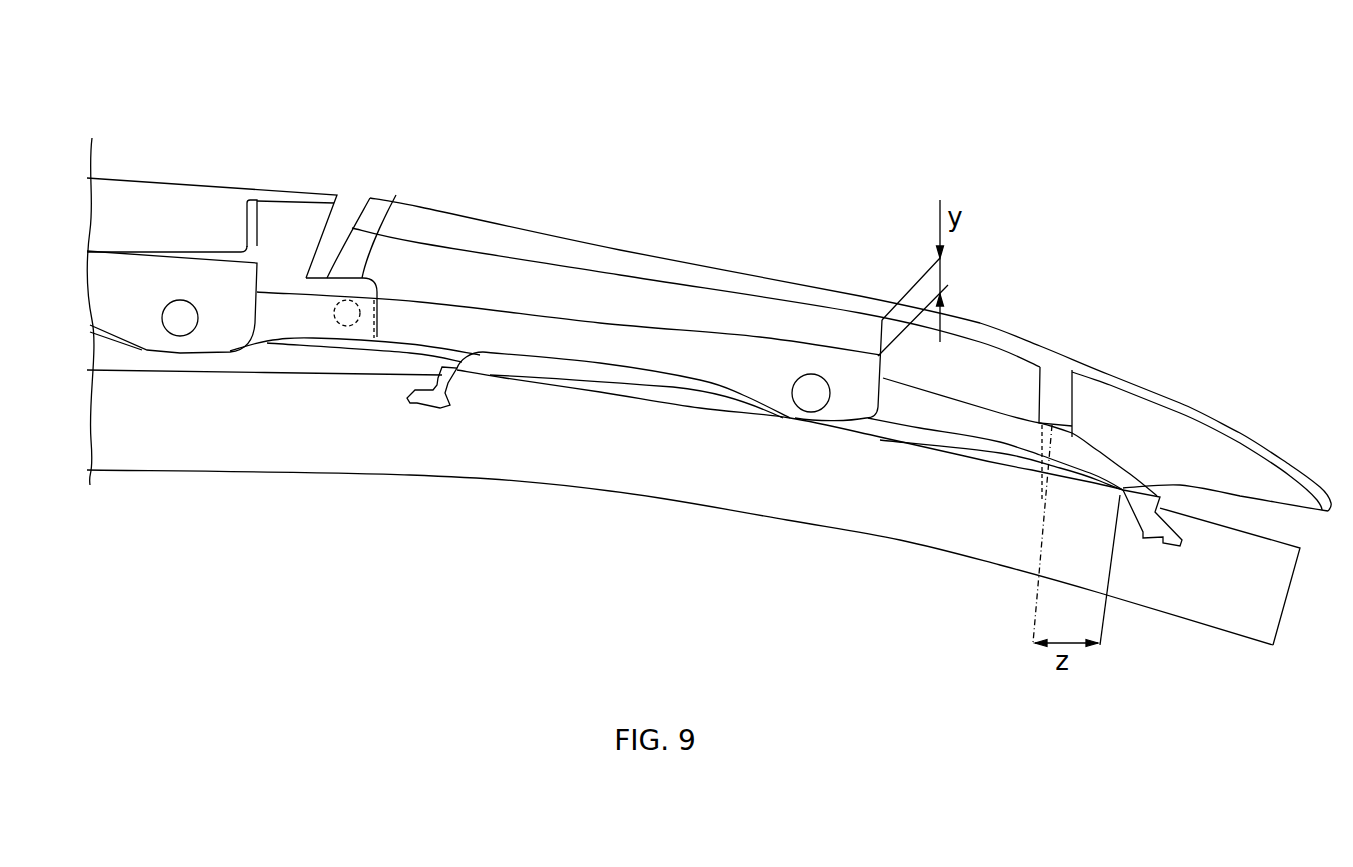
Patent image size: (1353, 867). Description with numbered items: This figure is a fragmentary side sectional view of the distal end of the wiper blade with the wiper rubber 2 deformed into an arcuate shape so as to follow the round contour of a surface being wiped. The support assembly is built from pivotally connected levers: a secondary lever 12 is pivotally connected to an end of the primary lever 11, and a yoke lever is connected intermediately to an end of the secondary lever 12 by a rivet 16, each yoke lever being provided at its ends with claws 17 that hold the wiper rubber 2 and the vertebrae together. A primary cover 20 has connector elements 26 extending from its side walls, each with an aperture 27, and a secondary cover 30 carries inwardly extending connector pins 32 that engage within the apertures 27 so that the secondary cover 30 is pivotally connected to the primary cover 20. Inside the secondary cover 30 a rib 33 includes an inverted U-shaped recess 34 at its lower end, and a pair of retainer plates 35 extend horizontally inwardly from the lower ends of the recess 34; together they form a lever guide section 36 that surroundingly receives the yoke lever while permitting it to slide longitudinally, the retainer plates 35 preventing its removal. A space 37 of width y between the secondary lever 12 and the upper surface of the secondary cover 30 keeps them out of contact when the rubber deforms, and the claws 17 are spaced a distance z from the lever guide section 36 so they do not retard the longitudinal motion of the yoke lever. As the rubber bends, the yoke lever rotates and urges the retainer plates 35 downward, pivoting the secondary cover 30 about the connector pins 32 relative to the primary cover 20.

The wiper rubber 2 is at (613, 492).
The primary lever 11 is at (180, 355).
The secondary lever 12 is at (610, 318).
The rivet 16 is at (918, 425).
The claw 17 is at (465, 393).
The primary cover 20 is at (158, 178).
The connector element 26 is at (396, 195).
The aperture 27 is at (338, 343).
The secondary cover 30 is at (737, 268).
The connector pin 32 is at (327, 317).
The rib 33 is at (1072, 412).
The recess 34 is at (1072, 437).
The retainer plate 35 is at (1047, 470).
The lever guide section 36 is at (1018, 473).
The space 37 is at (866, 329).